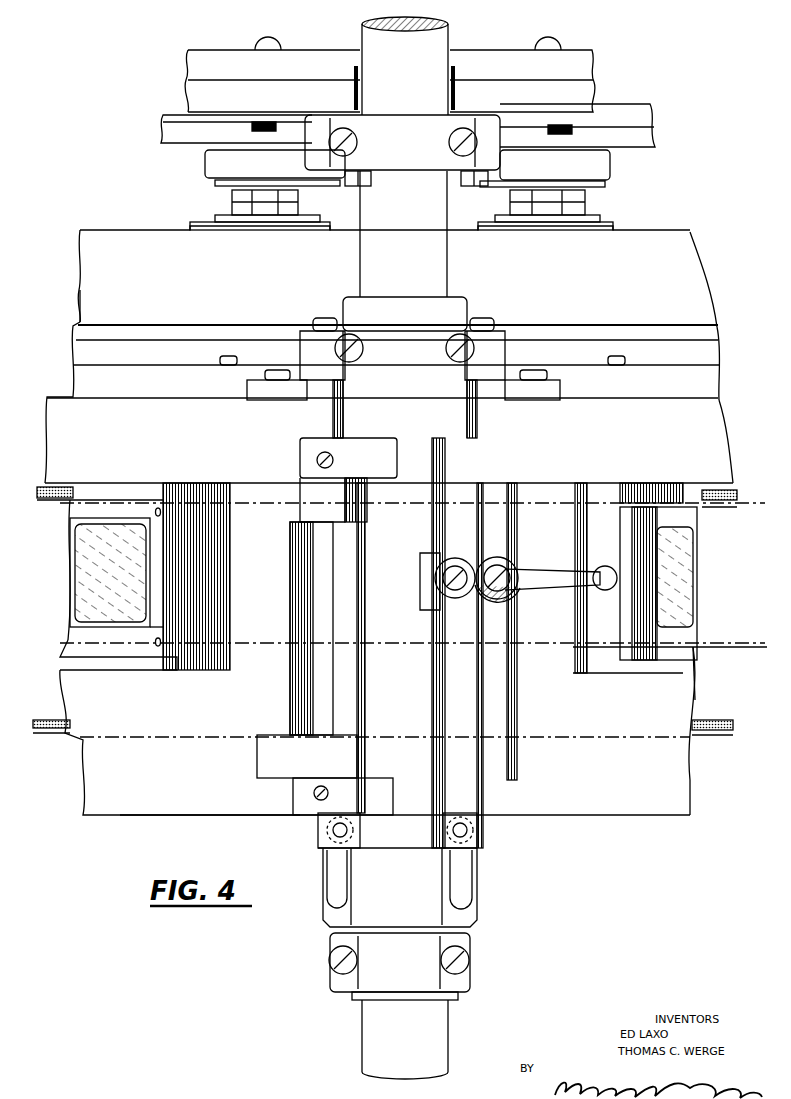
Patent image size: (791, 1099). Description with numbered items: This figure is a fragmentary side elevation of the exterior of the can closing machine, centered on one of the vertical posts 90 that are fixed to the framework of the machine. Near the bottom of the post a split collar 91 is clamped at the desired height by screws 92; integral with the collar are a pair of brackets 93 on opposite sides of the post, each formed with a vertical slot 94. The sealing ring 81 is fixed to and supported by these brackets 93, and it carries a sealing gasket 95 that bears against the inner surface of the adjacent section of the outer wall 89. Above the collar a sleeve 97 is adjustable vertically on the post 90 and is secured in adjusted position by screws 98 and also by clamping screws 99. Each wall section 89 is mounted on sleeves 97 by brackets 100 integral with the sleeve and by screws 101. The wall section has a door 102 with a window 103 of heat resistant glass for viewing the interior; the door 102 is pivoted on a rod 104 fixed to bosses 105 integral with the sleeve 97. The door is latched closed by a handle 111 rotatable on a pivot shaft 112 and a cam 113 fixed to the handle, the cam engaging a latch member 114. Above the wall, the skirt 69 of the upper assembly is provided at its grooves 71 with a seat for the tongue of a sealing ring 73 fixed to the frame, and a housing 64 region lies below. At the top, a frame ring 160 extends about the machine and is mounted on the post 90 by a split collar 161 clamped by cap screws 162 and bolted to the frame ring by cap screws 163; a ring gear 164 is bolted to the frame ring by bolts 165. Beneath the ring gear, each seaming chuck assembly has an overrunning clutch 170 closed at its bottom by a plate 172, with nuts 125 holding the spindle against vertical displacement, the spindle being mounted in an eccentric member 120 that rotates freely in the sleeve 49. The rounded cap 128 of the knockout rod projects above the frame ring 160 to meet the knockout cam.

The vertical post 90 is at (450, 36).
The frame ring 160 is at (590, 76).
The rounded cap 128 is at (268, 42).
The ring gear 164 is at (655, 128).
The bolt 165 is at (250, 128).
The split collar 161 is at (418, 151).
The cap screw 162 is at (350, 129).
The cap screw 163 is at (350, 183).
The overrunning clutch 170 is at (204, 163).
The plate 172 is at (215, 184).
The nut 125 is at (232, 200).
The eccentric member 120 is at (312, 222).
The sleeve 49 is at (190, 228).
The circular skirt 69 is at (704, 288).
The grooves 71 is at (708, 333).
The sealing ring 73 is at (718, 392).
The housing 64 is at (47, 428).
The sleeve 97 is at (466, 304).
The screw 99 is at (340, 334).
The screw 101 is at (486, 319).
The bracket 100 is at (506, 396).
The boss 105 is at (300, 450).
The rod 104 is at (318, 591).
The door 102 is at (175, 782).
The sealing ring 81 is at (729, 647).
The sectional outer wall 89 is at (148, 820).
The sealing gasket 95 is at (50, 500).
The window 103 is at (72, 578).
The latch member 114 is at (449, 565).
The pivot shaft 112 is at (506, 565).
The handle 111 is at (552, 572).
The cam 113 is at (519, 603).
The screw 98 is at (334, 838).
The bracket 93 is at (330, 872).
The vertical slot 94 is at (334, 900).
The screw 92 is at (331, 961).
The split collar 91 is at (456, 996).